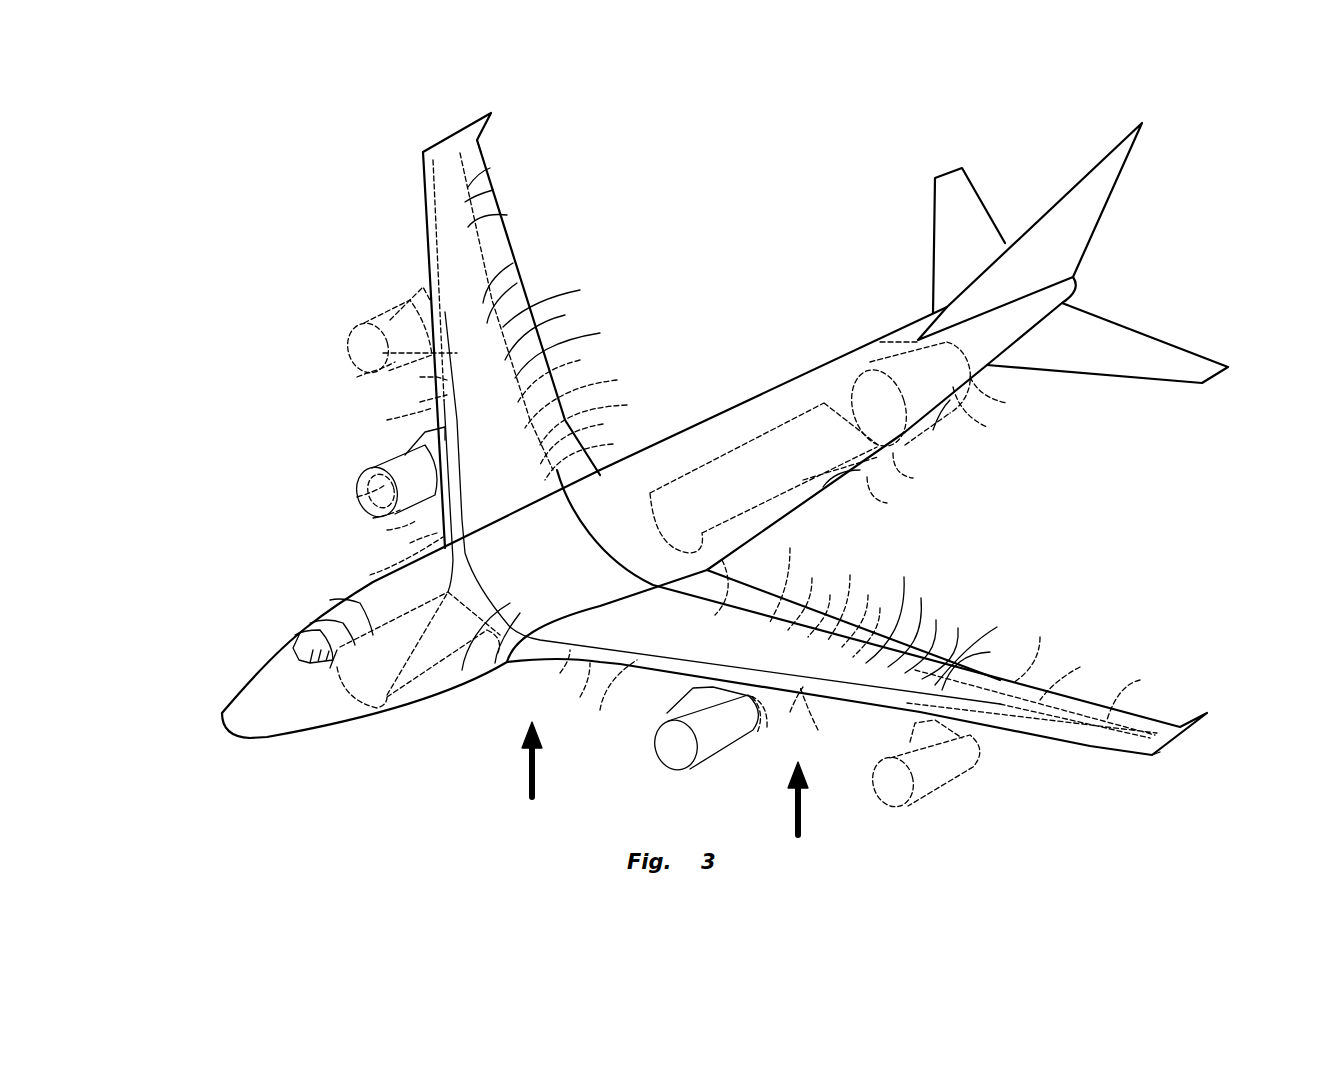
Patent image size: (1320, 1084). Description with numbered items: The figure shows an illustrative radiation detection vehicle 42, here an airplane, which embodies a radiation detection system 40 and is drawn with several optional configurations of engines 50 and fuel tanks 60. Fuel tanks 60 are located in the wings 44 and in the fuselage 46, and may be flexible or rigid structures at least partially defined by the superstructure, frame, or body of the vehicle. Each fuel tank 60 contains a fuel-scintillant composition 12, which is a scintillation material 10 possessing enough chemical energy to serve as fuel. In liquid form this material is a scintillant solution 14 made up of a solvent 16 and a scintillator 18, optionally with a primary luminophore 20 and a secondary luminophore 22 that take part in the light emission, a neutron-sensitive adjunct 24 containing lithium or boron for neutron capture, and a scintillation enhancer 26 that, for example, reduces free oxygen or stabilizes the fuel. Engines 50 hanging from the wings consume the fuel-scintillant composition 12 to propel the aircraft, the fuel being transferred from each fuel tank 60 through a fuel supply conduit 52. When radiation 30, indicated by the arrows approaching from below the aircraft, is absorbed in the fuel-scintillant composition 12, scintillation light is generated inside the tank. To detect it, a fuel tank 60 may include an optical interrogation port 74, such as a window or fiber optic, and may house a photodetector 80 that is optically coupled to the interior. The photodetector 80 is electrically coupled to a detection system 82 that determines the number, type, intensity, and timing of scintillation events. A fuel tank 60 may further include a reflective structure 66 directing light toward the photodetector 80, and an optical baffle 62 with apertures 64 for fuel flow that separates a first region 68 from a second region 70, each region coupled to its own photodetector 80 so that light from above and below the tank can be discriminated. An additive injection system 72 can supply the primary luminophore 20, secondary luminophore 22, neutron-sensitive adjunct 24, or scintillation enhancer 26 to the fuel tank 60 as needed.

The scintillation material 10 is at (507, 215).
The fuel-scintillant composition 12 is at (493, 190).
The scintillant solution 14 is at (727, 490).
The solvent 16 is at (726, 494).
The scintillator 18 is at (717, 506).
The primary luminophore 20 is at (711, 514).
The secondary luminophore 22 is at (710, 520).
The neutron-sensitive adjunct 24 is at (701, 526).
The scintillation enhancer 26 is at (694, 534).
The radiation 30 is at (527, 773).
The radiation detection system 40 is at (267, 143).
The radiation detection vehicle 42 is at (262, 190).
The wings 44 is at (422, 188).
The fuselage 46 is at (790, 380).
The engine 50 is at (367, 317).
The fuel supply conduit 52 is at (423, 282).
The fuel tank 60 is at (490, 168).
The optical baffle 62 is at (420, 377).
The apertures 64 is at (420, 402).
The reflective structure 66 is at (387, 420).
The first region 68 is at (357, 377).
The second region 70 is at (370, 575).
The additive injection system 72 is at (357, 497).
The optical interrogation port 74 is at (387, 530).
The photodetector 80 is at (373, 518).
The detection system 82 is at (410, 543).